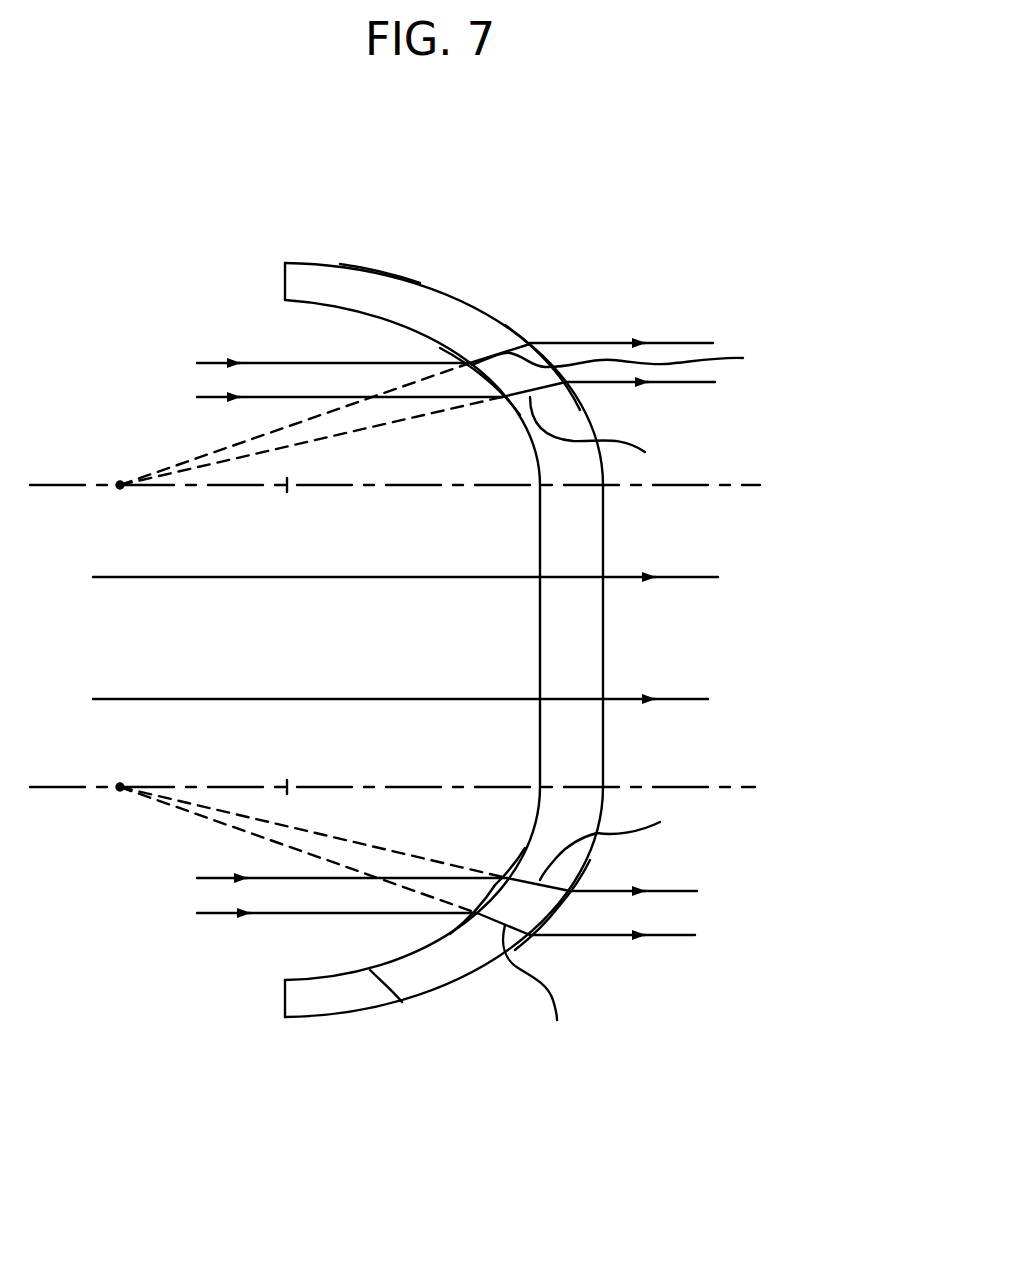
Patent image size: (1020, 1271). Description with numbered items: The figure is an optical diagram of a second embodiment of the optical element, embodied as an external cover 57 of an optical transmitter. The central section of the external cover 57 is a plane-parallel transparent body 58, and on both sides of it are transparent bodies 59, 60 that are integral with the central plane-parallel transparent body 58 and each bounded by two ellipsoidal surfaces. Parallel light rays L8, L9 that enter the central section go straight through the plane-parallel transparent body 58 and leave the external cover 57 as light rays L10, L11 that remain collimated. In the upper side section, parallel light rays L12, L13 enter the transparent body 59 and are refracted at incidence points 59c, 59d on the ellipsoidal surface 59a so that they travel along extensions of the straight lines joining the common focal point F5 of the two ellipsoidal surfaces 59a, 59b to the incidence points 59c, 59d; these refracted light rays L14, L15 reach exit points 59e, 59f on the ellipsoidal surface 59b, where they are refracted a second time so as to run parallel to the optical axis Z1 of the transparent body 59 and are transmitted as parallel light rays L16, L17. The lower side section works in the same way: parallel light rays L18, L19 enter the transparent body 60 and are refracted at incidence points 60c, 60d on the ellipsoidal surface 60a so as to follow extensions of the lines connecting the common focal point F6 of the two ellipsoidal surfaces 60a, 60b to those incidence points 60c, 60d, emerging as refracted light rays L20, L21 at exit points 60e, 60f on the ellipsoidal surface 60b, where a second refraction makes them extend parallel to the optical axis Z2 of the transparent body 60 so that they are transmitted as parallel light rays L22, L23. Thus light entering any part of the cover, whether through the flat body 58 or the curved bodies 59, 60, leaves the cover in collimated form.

The external cover 57 is at (462, 258).
The plane-parallel transparent body 58 is at (585, 522).
The transparent body 59 is at (450, 312).
The ellipsoidal surface 59a is at (323, 306).
The ellipsoidal surface 59b is at (380, 268).
The incidence point 59c is at (470, 363).
The incidence point 59d is at (503, 398).
The exit point 59e is at (537, 343).
The exit point 59f is at (535, 388).
The transparent body 60 is at (448, 972).
The ellipsoidal surface 60a is at (402, 1002).
The ellipsoidal surface 60b is at (320, 1017).
The incidence point 60c is at (507, 878).
The incidence point 60d is at (477, 913).
The exit point 60e is at (567, 890).
The exit point 60f is at (532, 935).
The optical axis Z1 is at (416, 484).
The optical axis Z2 is at (413, 784).
The common focal point F5 is at (120, 485).
The common focal point F6 is at (120, 788).
The parallel light ray L8 is at (235, 578).
The parallel light ray L9 is at (272, 700).
The light ray L10 is at (697, 577).
The light ray L11 is at (690, 699).
The parallel light ray L12 is at (197, 362).
The parallel light ray L13 is at (197, 397).
The refracted light ray L14 is at (634, 354).
The refracted light ray L15 is at (620, 439).
The parallel light ray L16 is at (675, 342).
The parallel light ray L17 is at (700, 383).
The parallel light ray L18 is at (199, 879).
The parallel light ray L19 is at (197, 913).
The refracted light ray L20 is at (630, 836).
The refracted light ray L21 is at (539, 998).
The parallel light ray L22 is at (677, 891).
The parallel light ray L23 is at (672, 935).